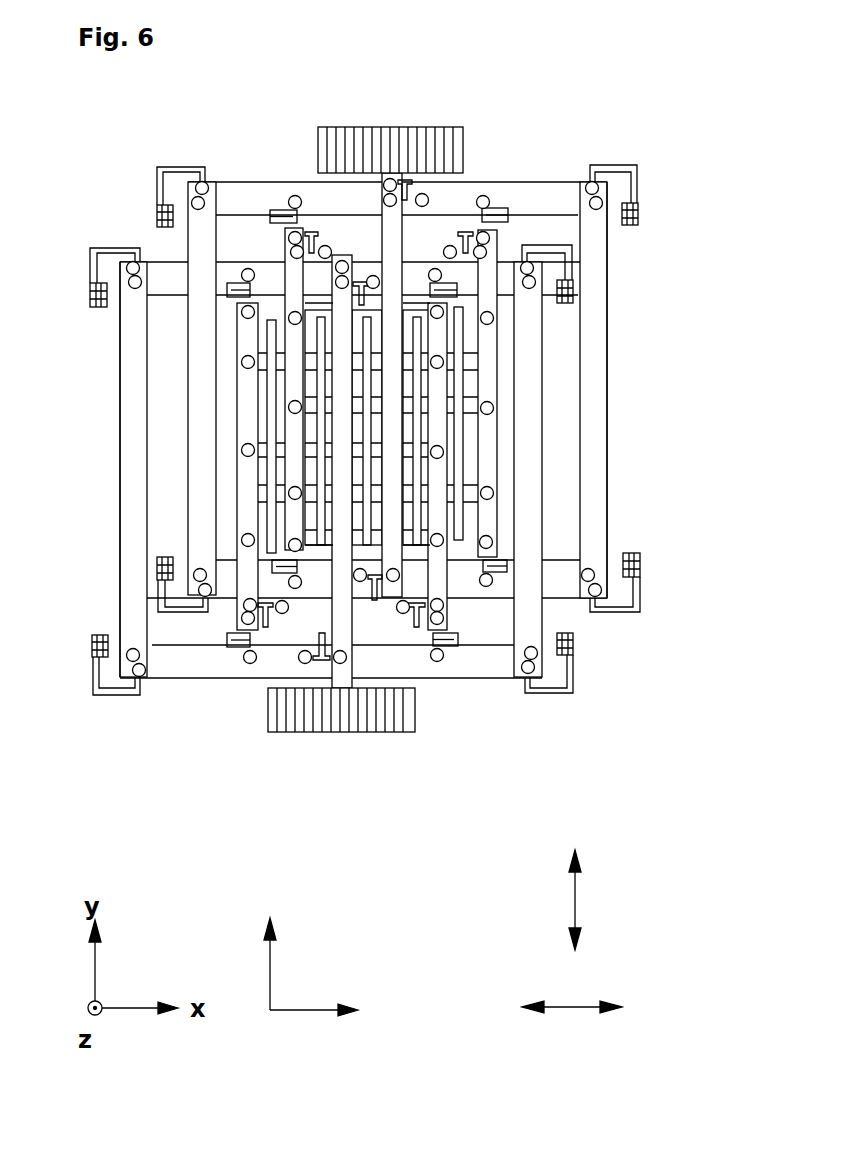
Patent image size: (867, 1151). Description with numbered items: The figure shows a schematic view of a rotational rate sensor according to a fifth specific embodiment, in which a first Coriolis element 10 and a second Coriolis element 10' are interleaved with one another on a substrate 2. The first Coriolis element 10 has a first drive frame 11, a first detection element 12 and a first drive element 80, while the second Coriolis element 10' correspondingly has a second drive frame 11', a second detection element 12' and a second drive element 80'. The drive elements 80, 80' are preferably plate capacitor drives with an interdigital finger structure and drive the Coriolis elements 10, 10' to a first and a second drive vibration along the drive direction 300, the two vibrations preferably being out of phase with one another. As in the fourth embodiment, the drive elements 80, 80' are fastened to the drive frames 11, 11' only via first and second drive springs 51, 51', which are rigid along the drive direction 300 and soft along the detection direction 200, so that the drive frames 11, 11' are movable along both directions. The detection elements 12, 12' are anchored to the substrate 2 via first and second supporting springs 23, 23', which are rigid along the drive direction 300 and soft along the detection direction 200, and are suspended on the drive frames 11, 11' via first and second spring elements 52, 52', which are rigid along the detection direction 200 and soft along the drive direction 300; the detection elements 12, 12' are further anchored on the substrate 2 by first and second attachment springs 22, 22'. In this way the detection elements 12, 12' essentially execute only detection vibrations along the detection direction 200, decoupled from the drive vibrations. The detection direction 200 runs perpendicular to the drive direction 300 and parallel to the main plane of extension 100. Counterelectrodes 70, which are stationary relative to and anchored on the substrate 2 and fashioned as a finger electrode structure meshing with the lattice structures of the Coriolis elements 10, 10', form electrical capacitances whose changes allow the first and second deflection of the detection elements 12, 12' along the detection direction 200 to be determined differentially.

The substrate 2 is at (606, 772).
The first Coriolis element 10 is at (67, 469).
The second Coriolis element 10' is at (664, 390).
The first drive frame 11 is at (91, 469).
The second drive frame 11' is at (642, 390).
The first detection element 12 is at (146, 466).
The second detection element 12' is at (591, 393).
The first attachment springs 22 is at (360, 466).
The second attachment springs 22' is at (406, 430).
The first supporting springs 23 is at (327, 678).
The second supporting springs 23' is at (415, 167).
The first drive springs 51 is at (243, 679).
The second drive springs 51' is at (459, 138).
The first spring elements 52 is at (209, 694).
The second spring elements 52' is at (515, 164).
The counterelectrodes 70 is at (455, 520).
The first drive element 80 is at (341, 533).
The second drive element 80' is at (390, 314).
The main plane of extension 100 is at (311, 967).
The detection direction 200 is at (572, 1023).
The drive direction 300 is at (605, 900).